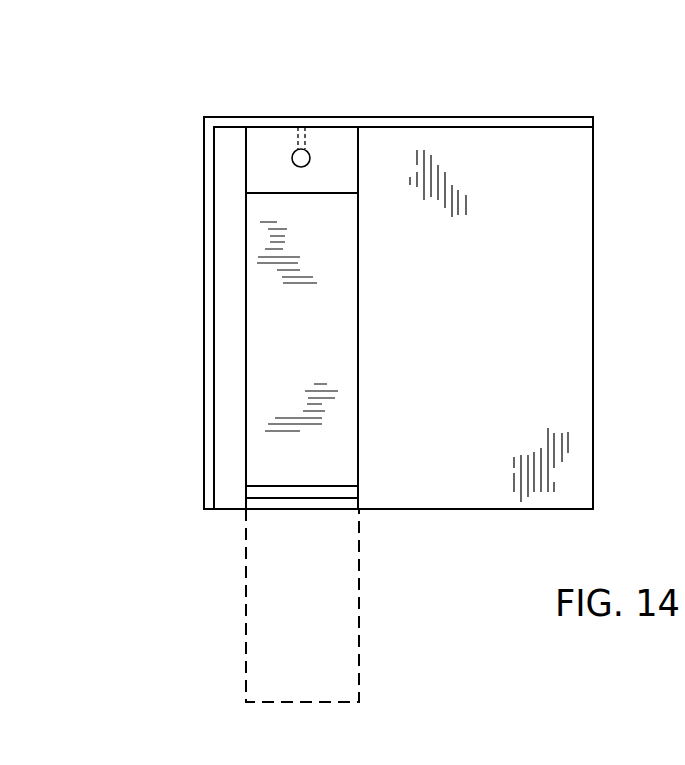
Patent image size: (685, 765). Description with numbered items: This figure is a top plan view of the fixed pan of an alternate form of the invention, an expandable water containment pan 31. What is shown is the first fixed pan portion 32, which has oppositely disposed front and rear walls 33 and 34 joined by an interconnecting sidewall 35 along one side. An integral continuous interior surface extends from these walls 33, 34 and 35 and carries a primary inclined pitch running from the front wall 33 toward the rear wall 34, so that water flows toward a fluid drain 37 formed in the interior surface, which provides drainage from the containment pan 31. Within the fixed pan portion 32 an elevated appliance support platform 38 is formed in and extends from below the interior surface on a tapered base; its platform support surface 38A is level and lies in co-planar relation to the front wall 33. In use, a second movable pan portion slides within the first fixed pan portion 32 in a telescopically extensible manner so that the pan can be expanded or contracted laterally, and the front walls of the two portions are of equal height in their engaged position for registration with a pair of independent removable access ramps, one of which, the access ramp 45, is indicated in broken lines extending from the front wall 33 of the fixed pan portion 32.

The expandable water containment pan 31 is at (554, 82).
The first fixed pan portion 32 is at (260, 115).
The front wall 33 is at (468, 508).
The rear wall 34 is at (425, 117).
The sidewall 35 is at (208, 388).
The fluid drain 37 is at (310, 154).
The elevated appliance support platform 38 is at (215, 232).
The platform support surface 38A is at (304, 340).
The removable access ramp 45 is at (335, 656).